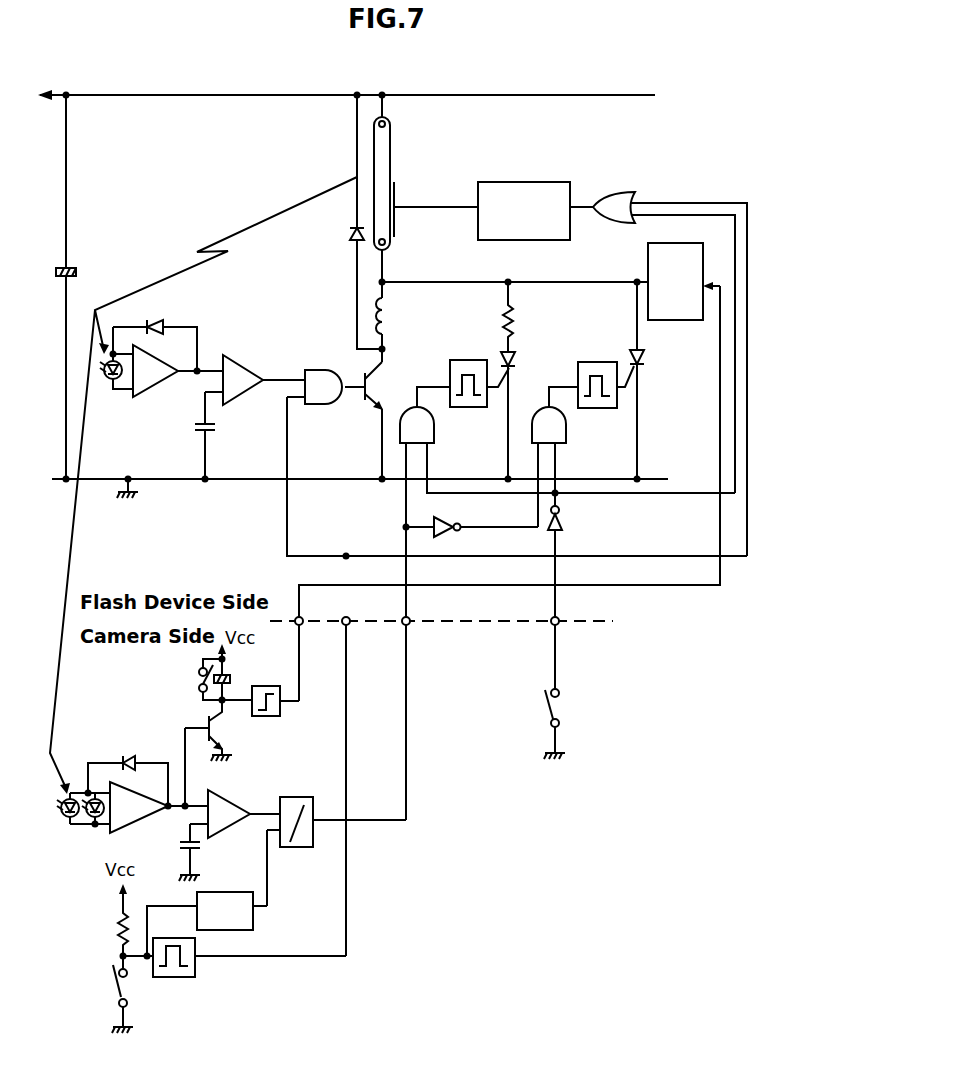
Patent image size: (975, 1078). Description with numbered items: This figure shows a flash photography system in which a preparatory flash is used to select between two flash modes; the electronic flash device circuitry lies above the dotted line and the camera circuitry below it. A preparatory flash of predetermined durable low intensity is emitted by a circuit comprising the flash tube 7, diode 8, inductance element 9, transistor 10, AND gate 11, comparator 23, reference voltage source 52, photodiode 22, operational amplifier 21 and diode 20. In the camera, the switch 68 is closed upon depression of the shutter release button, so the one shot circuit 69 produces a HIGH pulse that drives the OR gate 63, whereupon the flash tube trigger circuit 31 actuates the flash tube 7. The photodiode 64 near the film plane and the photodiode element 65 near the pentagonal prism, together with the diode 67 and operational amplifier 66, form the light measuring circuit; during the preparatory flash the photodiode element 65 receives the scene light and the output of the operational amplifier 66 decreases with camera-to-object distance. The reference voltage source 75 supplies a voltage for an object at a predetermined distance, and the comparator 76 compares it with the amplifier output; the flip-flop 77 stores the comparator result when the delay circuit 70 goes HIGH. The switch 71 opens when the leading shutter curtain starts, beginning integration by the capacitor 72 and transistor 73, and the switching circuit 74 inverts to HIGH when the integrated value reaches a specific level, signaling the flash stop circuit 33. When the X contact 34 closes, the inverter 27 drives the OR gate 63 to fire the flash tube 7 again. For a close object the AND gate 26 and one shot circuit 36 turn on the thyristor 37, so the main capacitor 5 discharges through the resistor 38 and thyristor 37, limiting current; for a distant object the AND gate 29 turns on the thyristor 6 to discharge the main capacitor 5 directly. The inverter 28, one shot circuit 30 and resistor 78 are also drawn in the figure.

The main capacitor 5 is at (69, 268).
The thyristor 6 is at (646, 352).
The flash tube 7 is at (390, 143).
The diode 8 is at (350, 222).
The inductance element 9 is at (387, 326).
The transistor 10 is at (380, 413).
The AND gate 11 is at (320, 404).
The diode 20 is at (164, 321).
The operational amplifier 21 is at (158, 386).
The photodiode 22 is at (111, 380).
The comparator 23 is at (243, 355).
The AND gate 26 is at (431, 443).
The inverter 27 is at (566, 514).
The inverter 28 is at (446, 518).
The AND gate 29 is at (563, 442).
The one-shot circuit 30 is at (598, 362).
The flash tube trigger circuit 31 is at (521, 182).
The flash stop circuit 33 is at (647, 270).
The X contact 34 is at (536, 692).
The one shot circuit 36 is at (452, 407).
The thyristor 37 is at (519, 352).
The resistor 38 is at (519, 312).
The reference voltage source 52 is at (216, 428).
The OR gate 63 is at (634, 191).
The photodiode 64 is at (61, 804).
The photodiode element 65 is at (92, 820).
The operational amplifier 66 is at (150, 815).
The diode 67 is at (127, 756).
The switch 68 is at (112, 979).
The one shot circuit 69 is at (197, 976).
The delay circuit 70 is at (256, 926).
The switch 71 is at (198, 674).
The capacitor 72 is at (232, 678).
The transistor 73 is at (223, 726).
The switching circuit 74 is at (281, 712).
The reference voltage source 75 is at (202, 846).
The comparator 76 is at (240, 800).
The flip-flop 77 is at (296, 797).
The resistor 78 is at (117, 926).